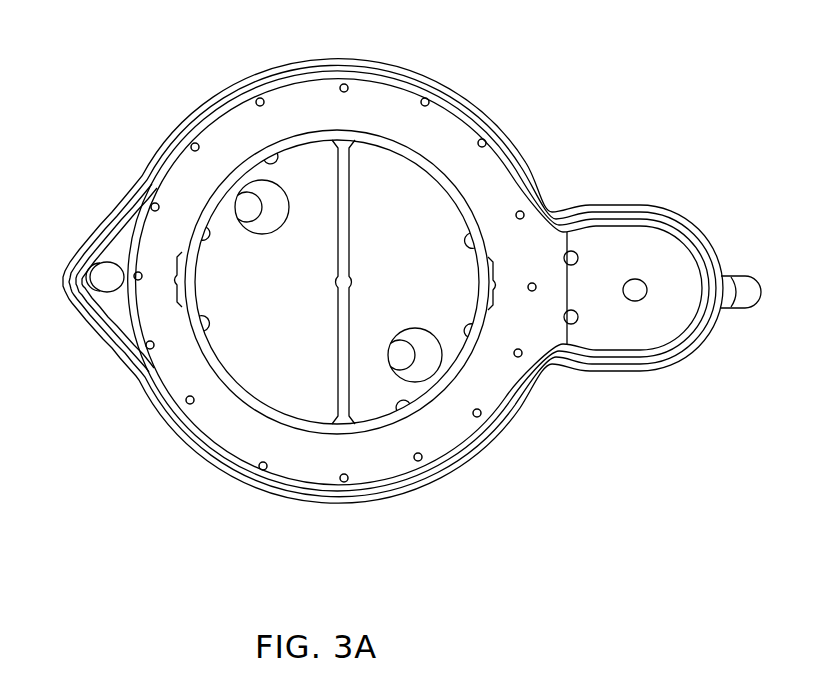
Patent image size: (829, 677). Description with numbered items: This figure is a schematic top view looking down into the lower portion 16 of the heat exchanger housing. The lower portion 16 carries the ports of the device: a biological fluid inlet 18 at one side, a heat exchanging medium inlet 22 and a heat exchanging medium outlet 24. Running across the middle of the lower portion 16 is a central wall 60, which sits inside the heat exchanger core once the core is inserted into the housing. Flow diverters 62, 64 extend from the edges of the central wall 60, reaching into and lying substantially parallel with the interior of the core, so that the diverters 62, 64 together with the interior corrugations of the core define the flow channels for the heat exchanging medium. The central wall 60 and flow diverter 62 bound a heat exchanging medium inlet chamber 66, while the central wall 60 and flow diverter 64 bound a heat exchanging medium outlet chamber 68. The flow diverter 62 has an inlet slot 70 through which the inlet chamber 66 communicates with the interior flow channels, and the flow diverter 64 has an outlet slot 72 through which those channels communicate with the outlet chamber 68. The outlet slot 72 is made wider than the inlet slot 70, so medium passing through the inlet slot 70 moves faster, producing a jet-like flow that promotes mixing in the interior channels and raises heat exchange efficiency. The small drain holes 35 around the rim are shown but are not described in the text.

The lower portion of the housing 16 is at (292, 498).
The biological fluid inlet 18 is at (112, 283).
The heat exchanging medium inlet 22 is at (452, 370).
The heat exchanging medium outlet 24 is at (278, 198).
The drain holes 35 is at (477, 413).
The central wall 60 is at (353, 185).
The flow diverter 62 is at (447, 182).
The flow diverter 64 is at (242, 170).
The heat exchanging medium inlet chamber 66 is at (395, 214).
The heat exchanging medium outlet chamber 68 is at (327, 403).
The inlet slot 70 is at (495, 283).
The outlet slot 72 is at (173, 278).